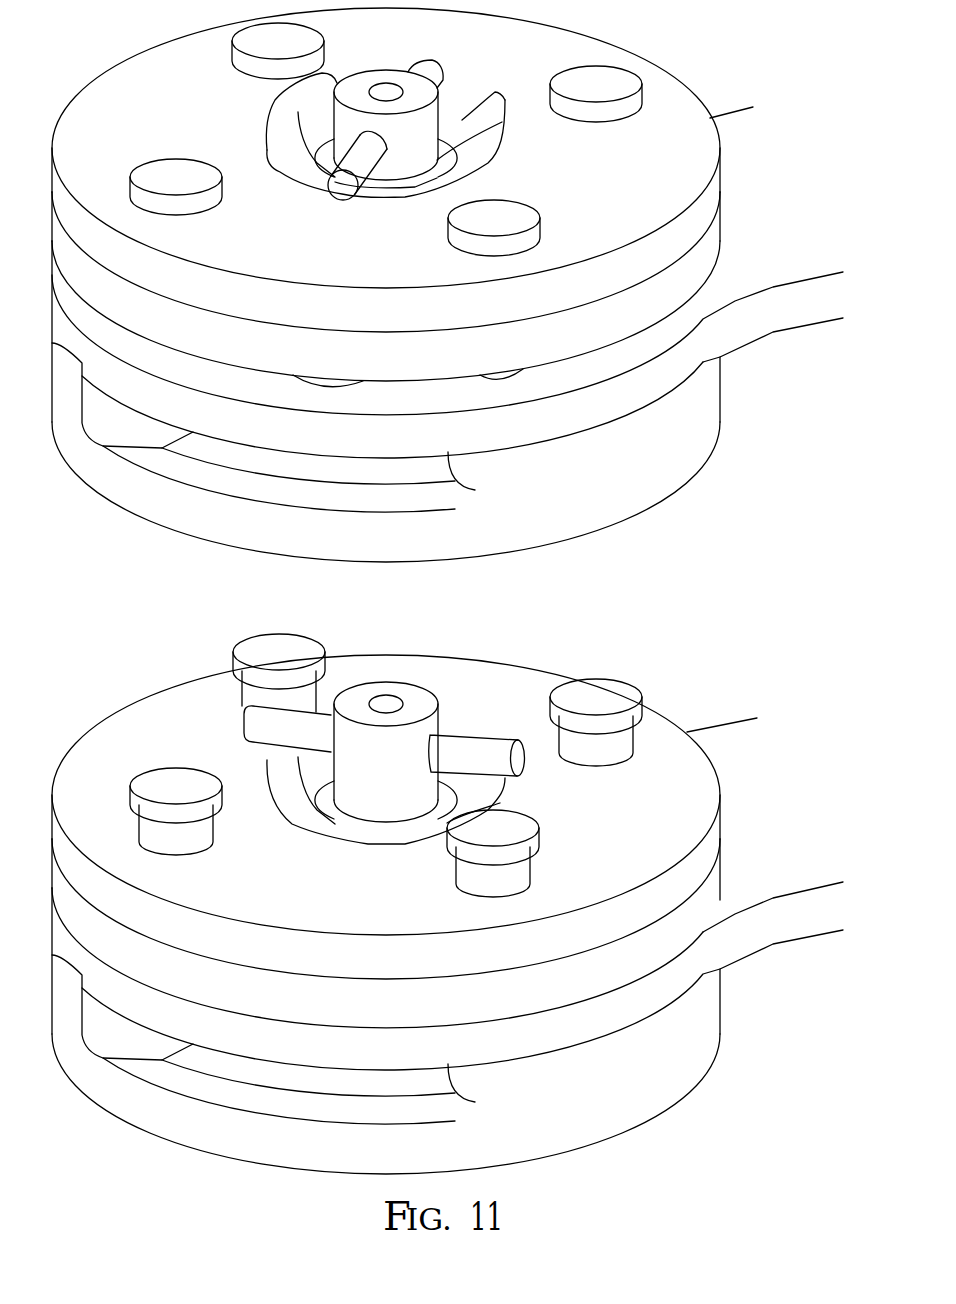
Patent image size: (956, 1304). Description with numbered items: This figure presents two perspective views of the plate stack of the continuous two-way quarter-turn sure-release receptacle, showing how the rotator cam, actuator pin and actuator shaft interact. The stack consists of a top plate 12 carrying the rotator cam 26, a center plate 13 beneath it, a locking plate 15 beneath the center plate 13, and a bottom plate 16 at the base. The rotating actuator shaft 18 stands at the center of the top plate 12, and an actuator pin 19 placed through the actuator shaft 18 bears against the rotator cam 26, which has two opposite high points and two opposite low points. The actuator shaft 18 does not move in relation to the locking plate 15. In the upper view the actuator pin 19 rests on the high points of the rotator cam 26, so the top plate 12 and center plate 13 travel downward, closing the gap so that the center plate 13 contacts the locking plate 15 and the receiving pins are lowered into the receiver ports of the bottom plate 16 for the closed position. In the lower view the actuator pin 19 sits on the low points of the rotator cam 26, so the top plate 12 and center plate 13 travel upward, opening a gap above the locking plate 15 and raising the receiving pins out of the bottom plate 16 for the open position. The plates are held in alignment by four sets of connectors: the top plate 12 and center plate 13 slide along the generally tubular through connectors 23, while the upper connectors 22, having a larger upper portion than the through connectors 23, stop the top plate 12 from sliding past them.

The top plate 12 is at (715, 188).
The center plate 13 is at (712, 247).
The locking plate 15 is at (770, 322).
The bottom plate 16 is at (687, 465).
The actuator shaft 18 is at (367, 77).
The actuator pin 19 is at (343, 197).
The upper connectors 22 is at (518, 207).
The through connectors 23 is at (520, 875).
The rotator cam 26 is at (270, 135).